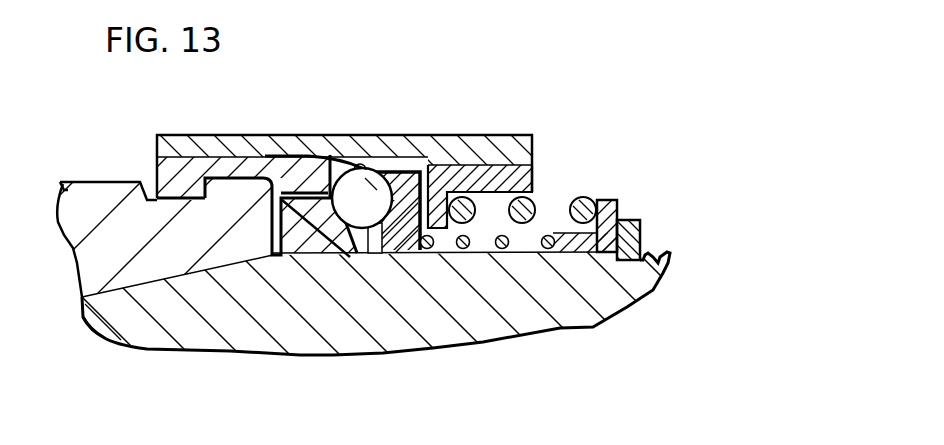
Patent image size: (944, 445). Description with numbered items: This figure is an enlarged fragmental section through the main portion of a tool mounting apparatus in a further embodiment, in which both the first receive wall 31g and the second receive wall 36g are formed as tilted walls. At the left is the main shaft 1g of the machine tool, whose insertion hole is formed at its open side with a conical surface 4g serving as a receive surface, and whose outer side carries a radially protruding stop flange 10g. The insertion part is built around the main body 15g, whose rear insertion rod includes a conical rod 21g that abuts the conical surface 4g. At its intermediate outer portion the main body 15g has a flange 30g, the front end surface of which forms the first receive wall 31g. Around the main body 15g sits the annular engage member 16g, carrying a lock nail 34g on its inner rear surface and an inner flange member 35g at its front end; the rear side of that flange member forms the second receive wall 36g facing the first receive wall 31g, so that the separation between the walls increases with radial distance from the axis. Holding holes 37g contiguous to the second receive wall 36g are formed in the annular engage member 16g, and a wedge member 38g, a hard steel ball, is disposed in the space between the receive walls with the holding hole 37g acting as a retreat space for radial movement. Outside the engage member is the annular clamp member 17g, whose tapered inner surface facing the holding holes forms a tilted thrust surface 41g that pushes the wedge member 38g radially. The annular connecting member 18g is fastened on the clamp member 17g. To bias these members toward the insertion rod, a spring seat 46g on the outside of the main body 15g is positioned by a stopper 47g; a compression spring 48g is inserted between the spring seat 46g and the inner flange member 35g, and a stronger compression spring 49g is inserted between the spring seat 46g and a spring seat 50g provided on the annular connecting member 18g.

The main shaft 1g is at (82, 182).
The conical surface 4g is at (140, 293).
The stop flange 10g is at (227, 190).
The main body 15g is at (241, 330).
The annular engage member 16g is at (274, 158).
The annular clamp member 17g is at (444, 148).
The annular connecting member 18g is at (531, 182).
The conical rod 21g is at (176, 326).
The flange 30g is at (308, 240).
The first receive wall 31g is at (353, 243).
The lock nail 34g is at (183, 175).
The inner flange member 35g is at (400, 224).
The second receive wall 36g is at (380, 226).
The holding hole 37g is at (333, 158).
The wedge member 38g is at (393, 155).
The tilted thrust surface 41g is at (362, 165).
The spring seat 46g is at (617, 202).
The stopper 47g is at (657, 208).
The compression spring 48g is at (500, 253).
The compression spring 49g is at (570, 198).
The spring seat 50g is at (508, 137).